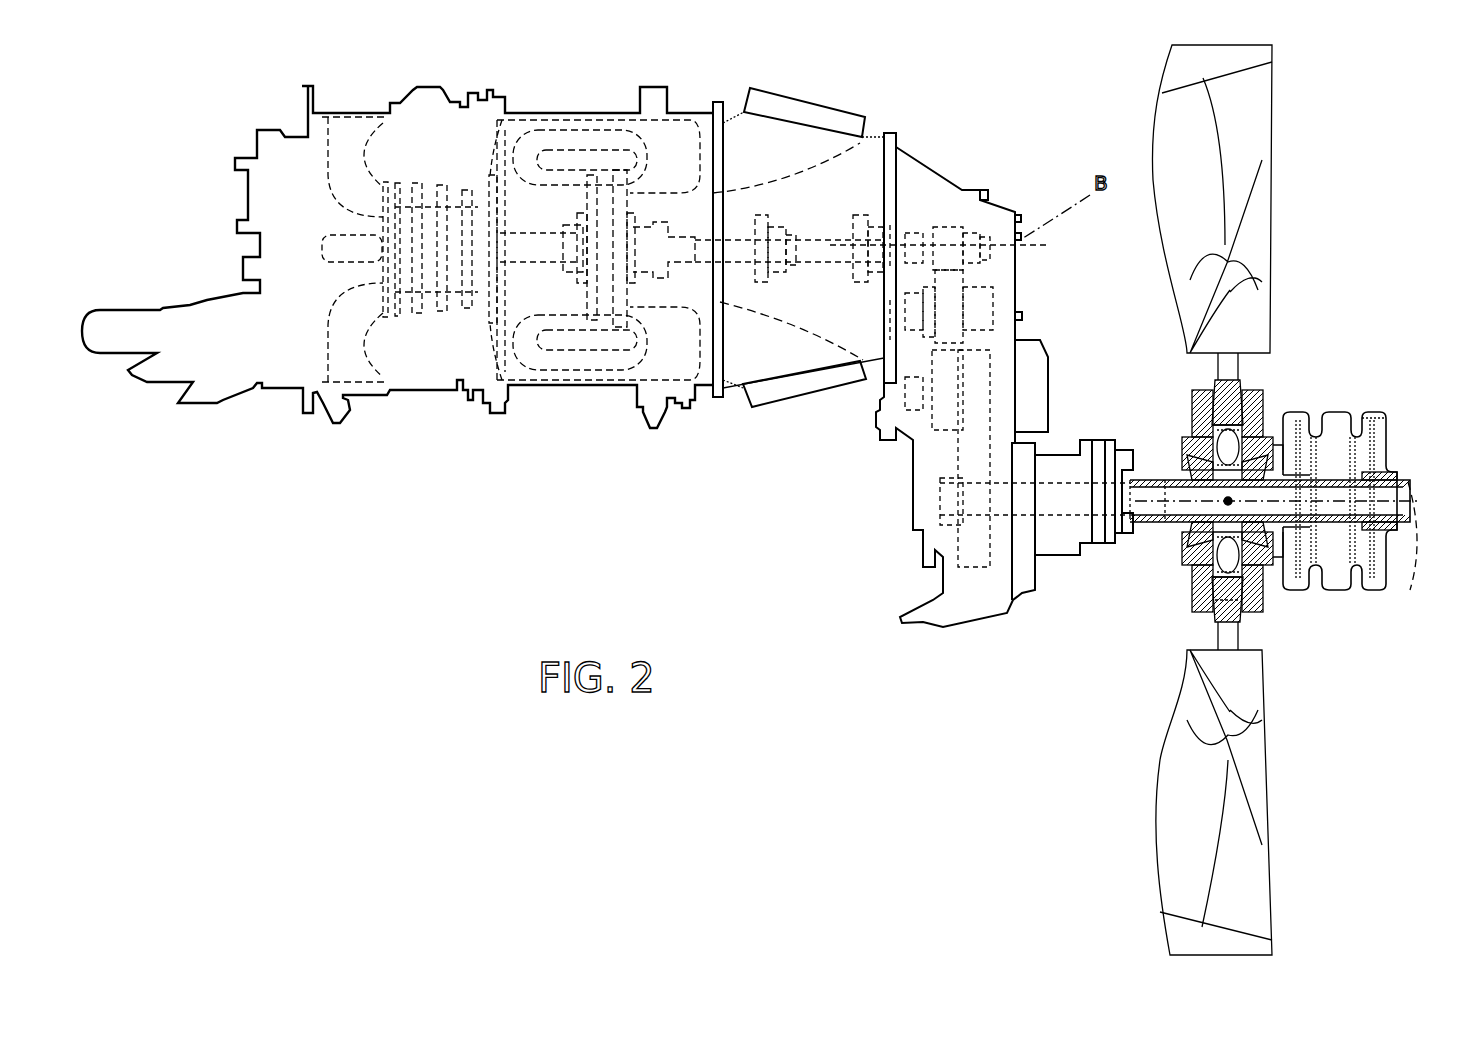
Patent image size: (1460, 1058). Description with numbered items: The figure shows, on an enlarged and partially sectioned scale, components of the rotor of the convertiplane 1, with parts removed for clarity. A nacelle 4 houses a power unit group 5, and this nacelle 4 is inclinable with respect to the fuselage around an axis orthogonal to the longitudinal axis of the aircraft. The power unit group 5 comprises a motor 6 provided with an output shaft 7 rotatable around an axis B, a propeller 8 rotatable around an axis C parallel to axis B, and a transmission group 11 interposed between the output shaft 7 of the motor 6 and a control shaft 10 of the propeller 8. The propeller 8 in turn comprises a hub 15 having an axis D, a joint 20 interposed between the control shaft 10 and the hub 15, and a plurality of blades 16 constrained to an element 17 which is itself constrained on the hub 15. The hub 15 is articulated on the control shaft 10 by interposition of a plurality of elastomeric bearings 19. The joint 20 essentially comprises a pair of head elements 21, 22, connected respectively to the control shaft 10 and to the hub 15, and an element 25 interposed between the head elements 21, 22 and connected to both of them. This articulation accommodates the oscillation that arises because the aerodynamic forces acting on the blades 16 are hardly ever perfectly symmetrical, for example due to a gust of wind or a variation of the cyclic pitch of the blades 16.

The convertiplane 1 is at (1040, 150).
The nacelle 4 is at (228, 343).
The power unit group 5 is at (545, 455).
The motor 6 is at (433, 408).
The output shaft 7 is at (812, 253).
The propeller 8 is at (1298, 157).
The control shaft 10 is at (1168, 527).
The transmission group 11 is at (887, 455).
The hub 15 is at (1200, 405).
The blades 16 is at (1248, 228).
The element 17 is at (1245, 605).
The elastomeric bearings 19 is at (1192, 533).
The joint 20 is at (1330, 404).
The head element 21 is at (1382, 425).
The head element 22 is at (1278, 420).
The element 25 is at (1362, 405).